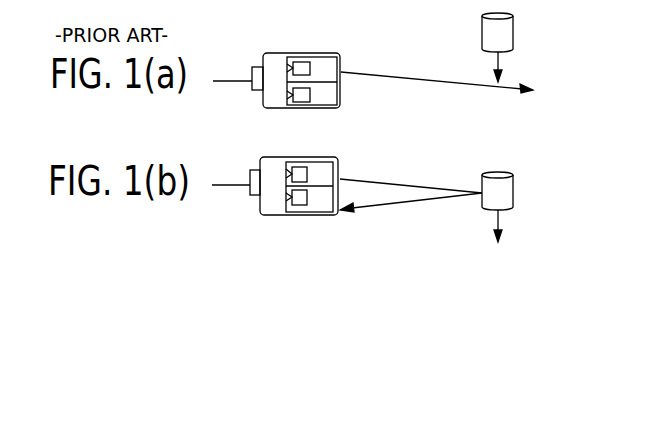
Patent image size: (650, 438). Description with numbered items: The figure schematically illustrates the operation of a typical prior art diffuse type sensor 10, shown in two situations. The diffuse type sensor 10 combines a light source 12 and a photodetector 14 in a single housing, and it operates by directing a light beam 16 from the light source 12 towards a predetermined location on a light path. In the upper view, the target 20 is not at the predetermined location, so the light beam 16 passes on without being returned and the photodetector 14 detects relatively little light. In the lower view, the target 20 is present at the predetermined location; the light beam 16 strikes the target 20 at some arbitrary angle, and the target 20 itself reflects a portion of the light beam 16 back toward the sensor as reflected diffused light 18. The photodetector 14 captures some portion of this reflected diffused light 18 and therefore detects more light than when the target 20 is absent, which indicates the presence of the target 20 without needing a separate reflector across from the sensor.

In FIG. 1A, the diffuse type sensor 10 is at (275, 53).
In FIG. 1B, the diffuse type sensor 10 is at (273, 157).
In FIG. 1A, the light source 12 is at (300, 59).
In FIG. 1B, the light source 12 is at (300, 165).
In FIG. 1A, the photodetector 14 is at (297, 103).
In FIG. 1B, the photodetector 14 is at (297, 207).
In FIG. 1A, the light beam 16 is at (437, 80).
In FIG. 1B, the light beam 16 is at (410, 182).
In FIG. 1B, the reflected diffused light 18 is at (410, 206).
In FIG. 1A, the target 20 is at (513, 32).
In FIG. 1B, the target 20 is at (513, 191).